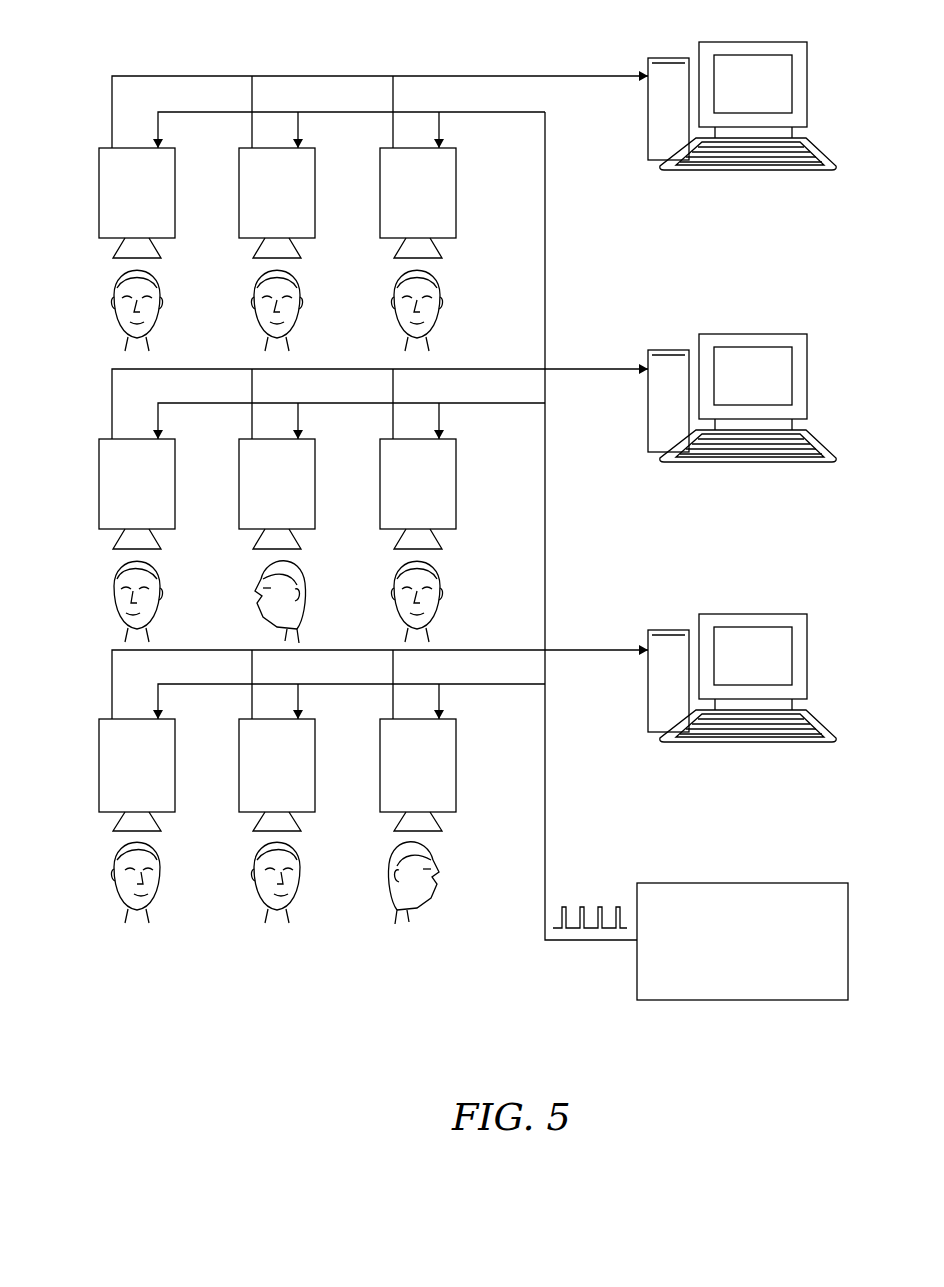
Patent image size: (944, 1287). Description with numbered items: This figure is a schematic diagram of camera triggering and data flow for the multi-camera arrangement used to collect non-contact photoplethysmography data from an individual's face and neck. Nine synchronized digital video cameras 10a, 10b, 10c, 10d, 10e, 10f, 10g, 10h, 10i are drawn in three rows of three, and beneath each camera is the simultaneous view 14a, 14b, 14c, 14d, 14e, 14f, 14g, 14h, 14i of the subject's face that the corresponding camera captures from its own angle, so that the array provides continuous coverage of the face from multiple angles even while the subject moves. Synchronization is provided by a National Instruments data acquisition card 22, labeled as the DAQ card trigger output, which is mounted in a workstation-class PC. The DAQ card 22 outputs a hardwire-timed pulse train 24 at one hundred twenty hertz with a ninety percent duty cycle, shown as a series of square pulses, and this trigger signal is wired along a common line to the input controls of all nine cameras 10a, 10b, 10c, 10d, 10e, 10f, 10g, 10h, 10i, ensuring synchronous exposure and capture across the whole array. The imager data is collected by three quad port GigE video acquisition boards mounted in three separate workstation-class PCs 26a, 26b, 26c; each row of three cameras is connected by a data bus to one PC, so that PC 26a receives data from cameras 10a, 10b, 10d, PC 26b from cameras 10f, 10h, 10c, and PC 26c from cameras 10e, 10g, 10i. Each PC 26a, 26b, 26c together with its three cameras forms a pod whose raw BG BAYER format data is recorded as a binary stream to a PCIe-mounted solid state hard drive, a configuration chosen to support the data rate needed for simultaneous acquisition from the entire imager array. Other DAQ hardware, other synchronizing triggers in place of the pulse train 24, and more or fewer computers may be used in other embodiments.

The digital video camera 10a is at (137, 203).
The digital video camera 10b is at (277, 203).
The digital video camera 10c is at (418, 494).
The digital video camera 10d is at (418, 203).
The digital video camera 10e is at (137, 775).
The digital video camera 10f is at (137, 494).
The digital video camera 10g is at (277, 775).
The digital video camera 10h is at (277, 494).
The digital video camera 10i is at (418, 775).
The simultaneous view 14a is at (97, 313).
The simultaneous view 14b is at (245, 313).
The simultaneous view 14c is at (458, 585).
The simultaneous view 14d is at (458, 293).
The simultaneous view 14e is at (97, 885).
The simultaneous view 14f is at (97, 604).
The simultaneous view 14g is at (245, 885).
The simultaneous view 14h is at (245, 604).
The simultaneous view 14i is at (458, 880).
The workstation-class PC 26a is at (807, 93).
The workstation-class PC 26b is at (807, 385).
The workstation-class PC 26c is at (807, 665).
The data acquisition card 22 is at (770, 882).
The pulse train 24 is at (590, 892).